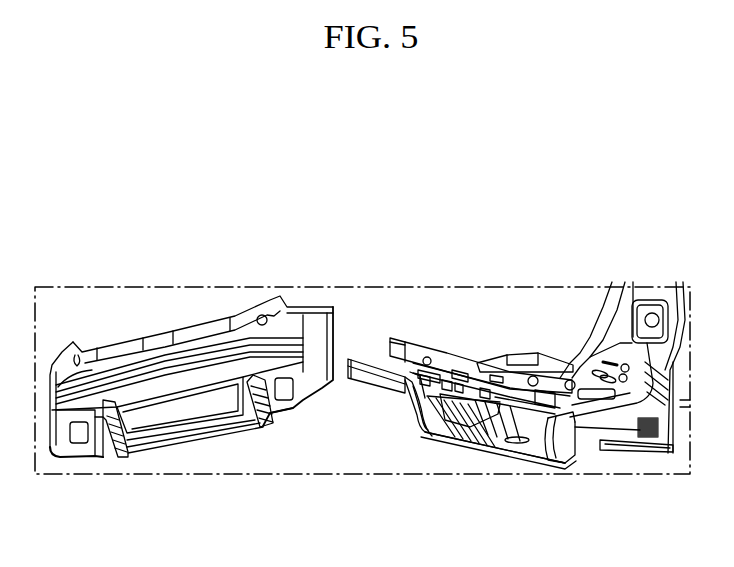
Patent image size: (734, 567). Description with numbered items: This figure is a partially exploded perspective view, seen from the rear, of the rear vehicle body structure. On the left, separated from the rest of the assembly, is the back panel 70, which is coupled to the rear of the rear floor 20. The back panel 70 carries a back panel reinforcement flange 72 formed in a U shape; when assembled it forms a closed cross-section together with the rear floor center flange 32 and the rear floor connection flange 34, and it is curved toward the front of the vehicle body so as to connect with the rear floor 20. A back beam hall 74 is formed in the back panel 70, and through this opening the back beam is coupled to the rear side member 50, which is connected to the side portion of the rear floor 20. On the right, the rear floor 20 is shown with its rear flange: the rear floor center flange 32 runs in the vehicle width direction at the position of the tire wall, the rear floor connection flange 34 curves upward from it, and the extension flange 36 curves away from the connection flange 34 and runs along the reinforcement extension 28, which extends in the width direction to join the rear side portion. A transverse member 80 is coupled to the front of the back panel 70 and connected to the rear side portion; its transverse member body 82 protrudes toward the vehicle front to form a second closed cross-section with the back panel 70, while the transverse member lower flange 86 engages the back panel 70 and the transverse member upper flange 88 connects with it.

The rear floor 20 is at (539, 464).
The reinforcement extension 28 is at (630, 440).
The rear floor center flange 32 is at (503, 448).
The rear floor connection flange 34 is at (412, 412).
The extension flange 36 is at (363, 380).
The rear side member 50 is at (598, 466).
The back panel 70 is at (168, 450).
The back panel reinforcement flange 72 is at (123, 457).
The back beam hall 74 is at (78, 443).
The transverse member 80 is at (435, 347).
The transverse member body 82 is at (515, 380).
The transverse member lower flange 86 is at (470, 400).
The transverse member upper flange 88 is at (543, 378).